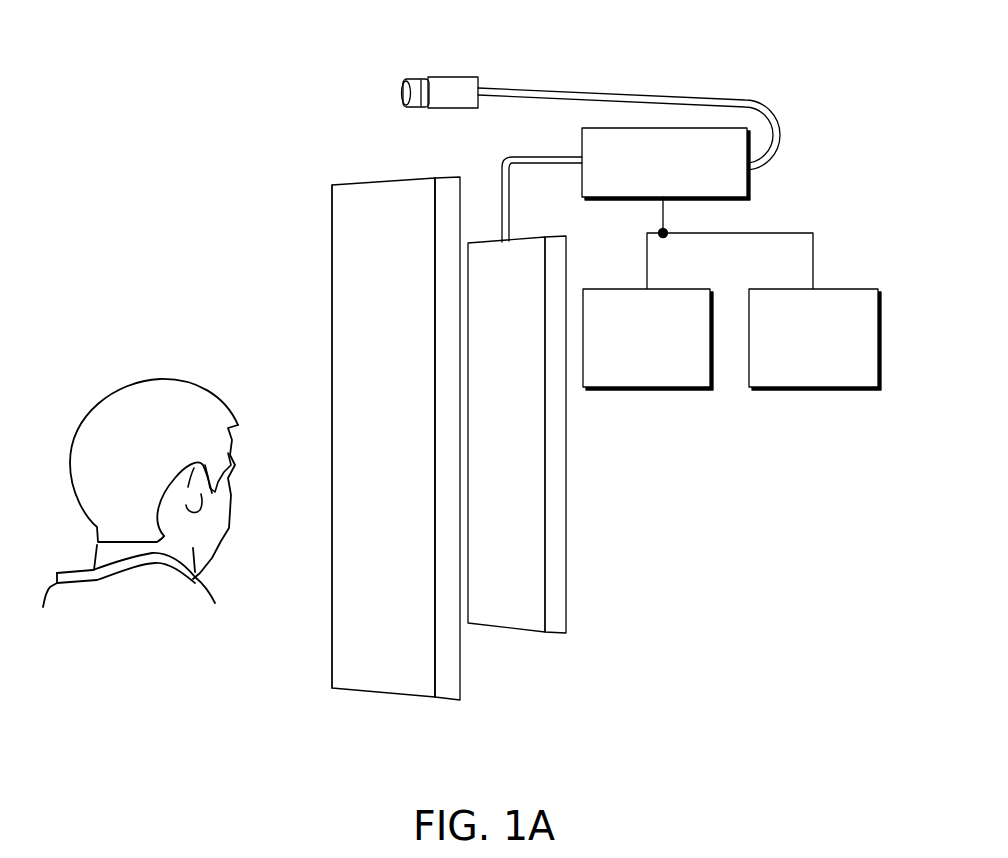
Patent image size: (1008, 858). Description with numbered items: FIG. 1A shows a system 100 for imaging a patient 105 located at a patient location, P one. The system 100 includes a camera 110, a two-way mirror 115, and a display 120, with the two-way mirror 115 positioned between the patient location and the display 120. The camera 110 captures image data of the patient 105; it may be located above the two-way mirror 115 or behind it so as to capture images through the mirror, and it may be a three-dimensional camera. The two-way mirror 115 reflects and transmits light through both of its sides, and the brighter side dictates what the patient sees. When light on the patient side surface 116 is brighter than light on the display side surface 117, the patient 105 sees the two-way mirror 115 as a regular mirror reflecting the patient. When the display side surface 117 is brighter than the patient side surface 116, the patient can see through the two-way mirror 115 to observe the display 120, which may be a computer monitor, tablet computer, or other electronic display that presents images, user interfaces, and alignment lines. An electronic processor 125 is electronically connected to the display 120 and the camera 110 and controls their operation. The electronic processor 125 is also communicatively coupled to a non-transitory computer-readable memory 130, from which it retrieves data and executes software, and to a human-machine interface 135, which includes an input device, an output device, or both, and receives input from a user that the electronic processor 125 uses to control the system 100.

The system 100 is at (298, 95).
The patient 105 is at (140, 672).
The camera 110 is at (455, 77).
The two-way mirror 115 is at (390, 722).
The patient side surface 116 is at (332, 436).
The display side surface 117 is at (445, 184).
The display 120 is at (543, 465).
The electronic processor 125 is at (750, 185).
The non-transitory computer-readable memory 130 is at (650, 390).
The human-machine interface 135 is at (817, 390).